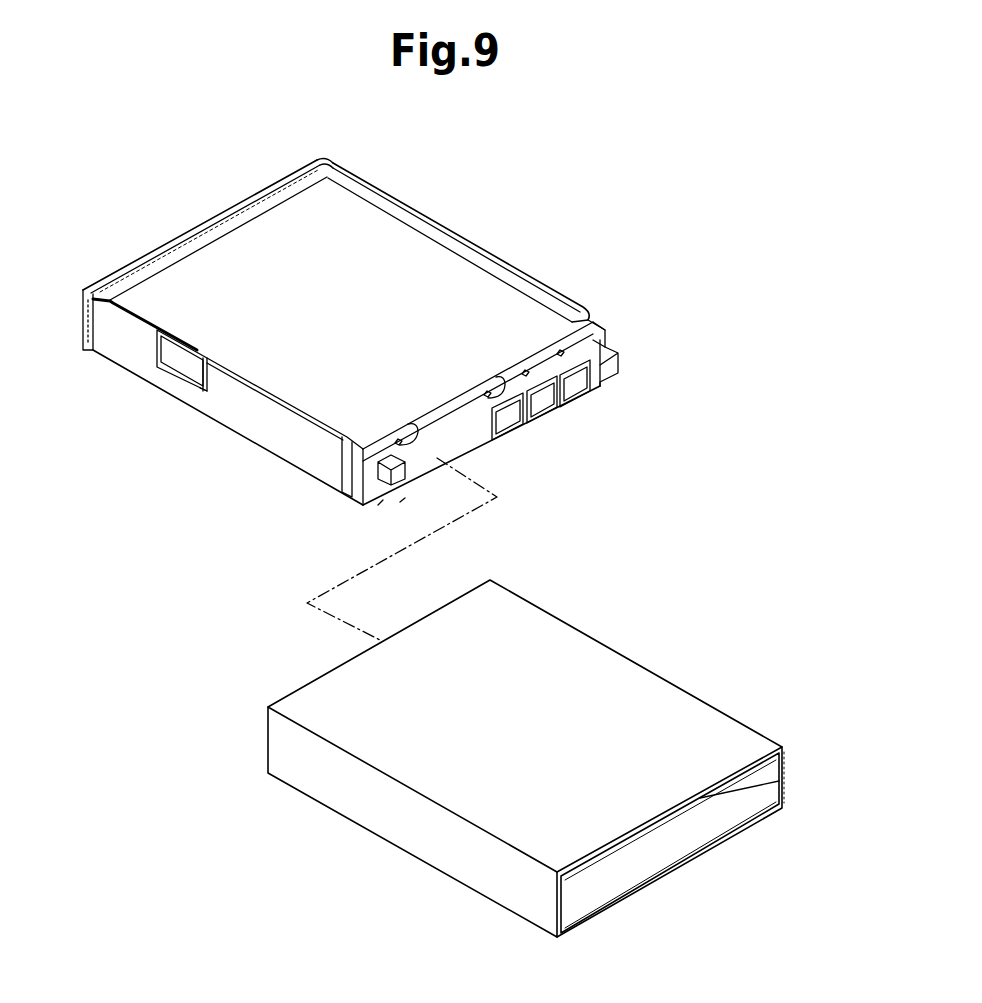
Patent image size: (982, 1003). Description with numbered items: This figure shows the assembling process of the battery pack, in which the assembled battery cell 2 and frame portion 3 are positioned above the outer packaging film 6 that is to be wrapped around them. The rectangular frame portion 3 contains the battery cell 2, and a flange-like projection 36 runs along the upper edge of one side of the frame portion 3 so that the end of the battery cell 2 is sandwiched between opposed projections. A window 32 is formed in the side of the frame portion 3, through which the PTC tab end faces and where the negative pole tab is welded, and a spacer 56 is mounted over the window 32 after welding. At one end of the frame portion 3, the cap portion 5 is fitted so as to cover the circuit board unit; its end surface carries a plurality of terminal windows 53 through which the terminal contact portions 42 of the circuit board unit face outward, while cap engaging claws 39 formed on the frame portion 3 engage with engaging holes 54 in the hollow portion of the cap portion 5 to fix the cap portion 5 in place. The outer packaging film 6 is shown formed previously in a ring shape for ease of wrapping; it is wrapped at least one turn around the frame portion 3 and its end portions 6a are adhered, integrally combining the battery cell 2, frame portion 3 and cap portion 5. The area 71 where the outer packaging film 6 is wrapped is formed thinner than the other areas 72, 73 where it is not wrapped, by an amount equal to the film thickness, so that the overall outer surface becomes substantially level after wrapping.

The battery cell 2 is at (300, 391).
The frame portion 3 is at (251, 448).
The cap portion 5 is at (622, 360).
The outer packaging film 6 is at (645, 666).
The adhered portion 6a is at (753, 814).
The window 32 is at (192, 390).
The flange-like projection 36 is at (174, 257).
The cap engaging claws 39 is at (486, 390).
The terminal contact portions 42 is at (582, 386).
The terminal windows 53 is at (603, 376).
The engaging holes 54 is at (500, 372).
The spacer 56 is at (177, 361).
The area where the outer packaging film is wrapped 71 is at (448, 233).
The area where the outer packaging film is not wrapped 72 is at (297, 163).
The area where the outer packaging film is not wrapped 73 is at (590, 332).